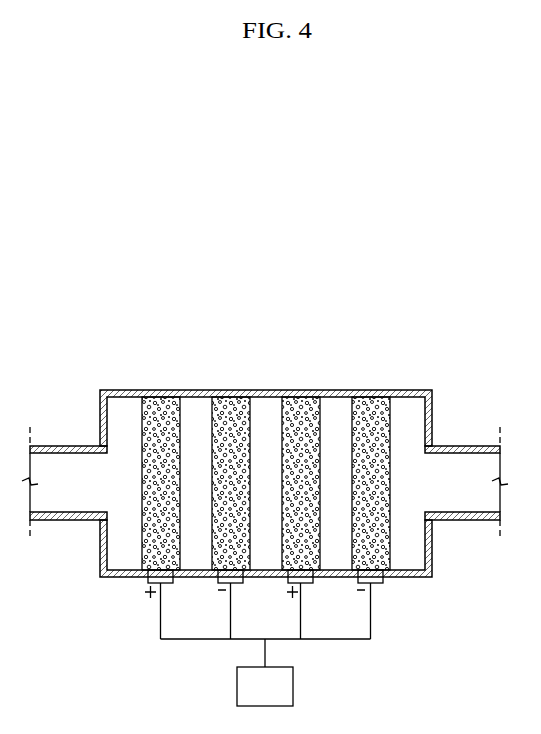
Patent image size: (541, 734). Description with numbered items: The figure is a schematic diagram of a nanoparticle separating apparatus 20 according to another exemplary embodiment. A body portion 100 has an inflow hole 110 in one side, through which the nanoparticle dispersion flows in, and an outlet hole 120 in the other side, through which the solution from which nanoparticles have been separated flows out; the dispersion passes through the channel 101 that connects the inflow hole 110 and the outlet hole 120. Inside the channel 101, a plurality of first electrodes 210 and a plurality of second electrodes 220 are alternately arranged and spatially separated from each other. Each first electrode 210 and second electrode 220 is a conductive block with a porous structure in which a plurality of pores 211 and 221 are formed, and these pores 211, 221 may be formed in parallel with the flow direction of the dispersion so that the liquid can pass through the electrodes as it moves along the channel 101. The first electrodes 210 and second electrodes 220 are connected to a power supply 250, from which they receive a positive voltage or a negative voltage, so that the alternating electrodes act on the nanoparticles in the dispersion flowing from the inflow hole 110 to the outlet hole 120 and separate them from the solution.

The nanoparticle separating apparatus 20 is at (378, 308).
The body portion 100 is at (401, 392).
The channel 101 is at (271, 413).
The inflow hole 110 is at (70, 478).
The outlet hole 120 is at (472, 478).
The first electrode 210 is at (144, 404).
The pores 211 is at (178, 402).
The second electrode 220 is at (247, 560).
The pores 221 is at (215, 553).
The power supply 250 is at (294, 684).